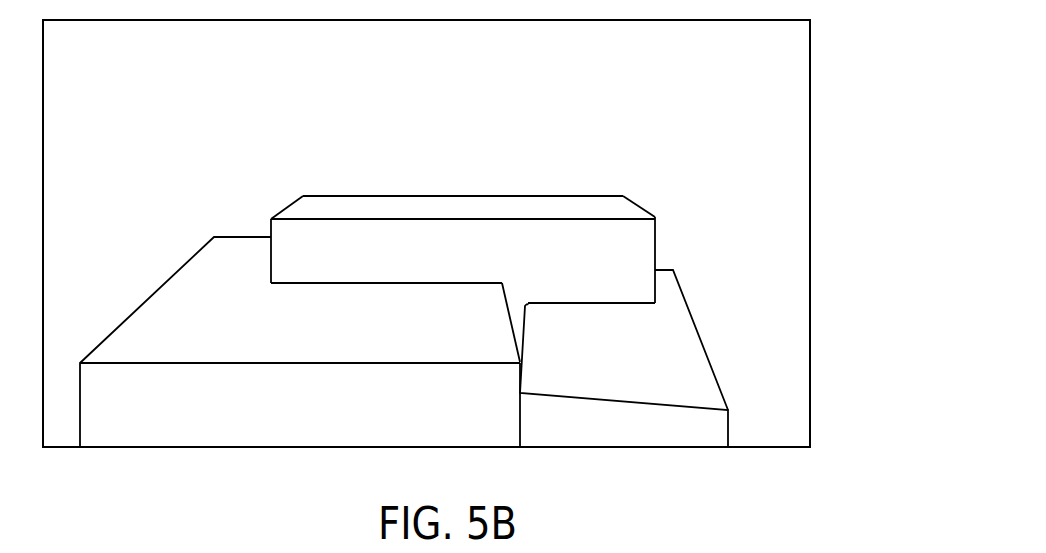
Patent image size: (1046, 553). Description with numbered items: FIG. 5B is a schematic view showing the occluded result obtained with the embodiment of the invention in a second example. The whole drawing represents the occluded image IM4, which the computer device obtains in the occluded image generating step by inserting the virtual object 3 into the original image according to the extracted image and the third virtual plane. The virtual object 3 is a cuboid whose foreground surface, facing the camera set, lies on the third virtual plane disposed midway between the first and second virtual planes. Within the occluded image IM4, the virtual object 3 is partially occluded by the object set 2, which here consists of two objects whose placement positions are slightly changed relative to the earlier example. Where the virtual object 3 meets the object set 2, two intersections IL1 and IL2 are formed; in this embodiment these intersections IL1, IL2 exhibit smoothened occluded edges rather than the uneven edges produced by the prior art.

The object set 2 is at (551, 345).
The virtual object 3 is at (523, 233).
The intersection IL1 is at (369, 283).
The intersection IL2 is at (563, 303).
The occluded image IM4 is at (462, 233).